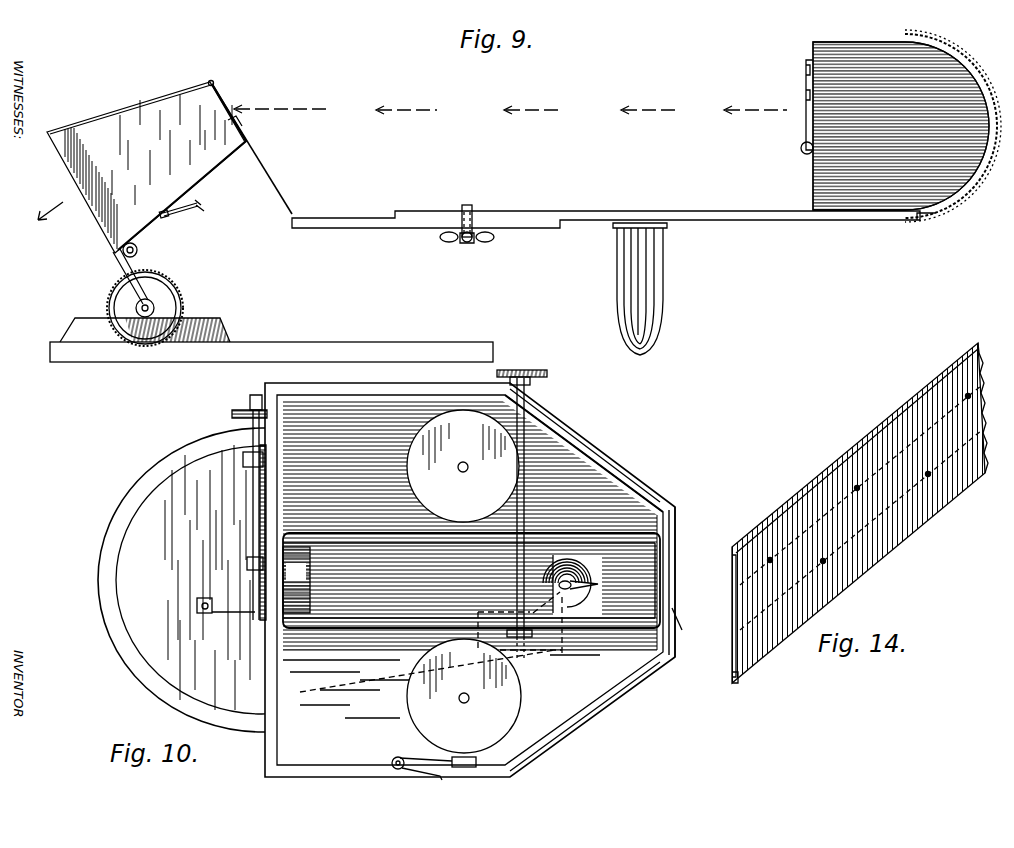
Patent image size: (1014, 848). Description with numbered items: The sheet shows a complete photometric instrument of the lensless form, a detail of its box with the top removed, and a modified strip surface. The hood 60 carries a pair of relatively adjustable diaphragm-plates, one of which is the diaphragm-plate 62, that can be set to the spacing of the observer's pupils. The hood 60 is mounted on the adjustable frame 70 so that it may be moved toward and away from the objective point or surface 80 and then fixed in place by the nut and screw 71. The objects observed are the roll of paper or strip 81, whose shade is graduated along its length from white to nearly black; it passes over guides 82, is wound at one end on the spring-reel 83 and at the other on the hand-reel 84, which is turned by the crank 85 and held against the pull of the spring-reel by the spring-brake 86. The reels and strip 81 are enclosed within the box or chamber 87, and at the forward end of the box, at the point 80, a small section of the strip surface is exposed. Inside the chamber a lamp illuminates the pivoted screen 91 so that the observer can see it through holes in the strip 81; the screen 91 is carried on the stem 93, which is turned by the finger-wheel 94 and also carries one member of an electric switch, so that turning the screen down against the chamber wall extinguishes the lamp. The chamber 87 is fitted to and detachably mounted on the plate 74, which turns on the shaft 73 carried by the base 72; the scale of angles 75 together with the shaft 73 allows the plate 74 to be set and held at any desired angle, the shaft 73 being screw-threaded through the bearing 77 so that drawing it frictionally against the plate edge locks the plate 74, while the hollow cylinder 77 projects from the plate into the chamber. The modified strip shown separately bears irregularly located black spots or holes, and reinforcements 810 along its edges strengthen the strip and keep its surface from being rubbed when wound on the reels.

In FIG. 9, the hood 60 is at (813, 180).
In FIG. 9, the diaphragm-plate 62 is at (803, 128).
In FIG. 9, the adjustable frame 70 is at (598, 220).
In FIG. 9, the nut and screw 71 is at (462, 243).
In FIG. 9, the base 72 is at (190, 362).
In FIG. 9, the shaft 73 is at (162, 305).
In FIG. 9, the plate 74 is at (102, 234).
In FIG. 10, the plate 74 is at (263, 647).
In FIG. 9, the scale of angles 75 is at (107, 305).
In FIG. 10, the scale of angles 75 is at (200, 617).
In FIG. 10, the bearing 77 is at (296, 580).
In FIG. 9, the objective point or surface 80 is at (226, 103).
In FIG. 10, the objective point or surface 80 is at (680, 582).
In FIG. 10, the roll of paper or strip 81 is at (572, 673).
In FIG. 14, the roll of paper or strip 81 is at (860, 513).
In FIG. 10, the guides 82 is at (668, 520).
In FIG. 10, the spring-reel 83 is at (463, 466).
In FIG. 10, the hand-reel 84 is at (464, 696).
In FIG. 9, the crank 85 is at (204, 205).
In FIG. 10, the spring-brake 86 is at (466, 768).
In FIG. 9, the box or chamber 87 is at (146, 167).
In FIG. 10, the pivoted screen 91 is at (518, 590).
In FIG. 10, the stem 93 is at (530, 390).
In FIG. 10, the finger-wheel 94 is at (548, 372).
In FIG. 14, the reinforcements 810 is at (731, 683).